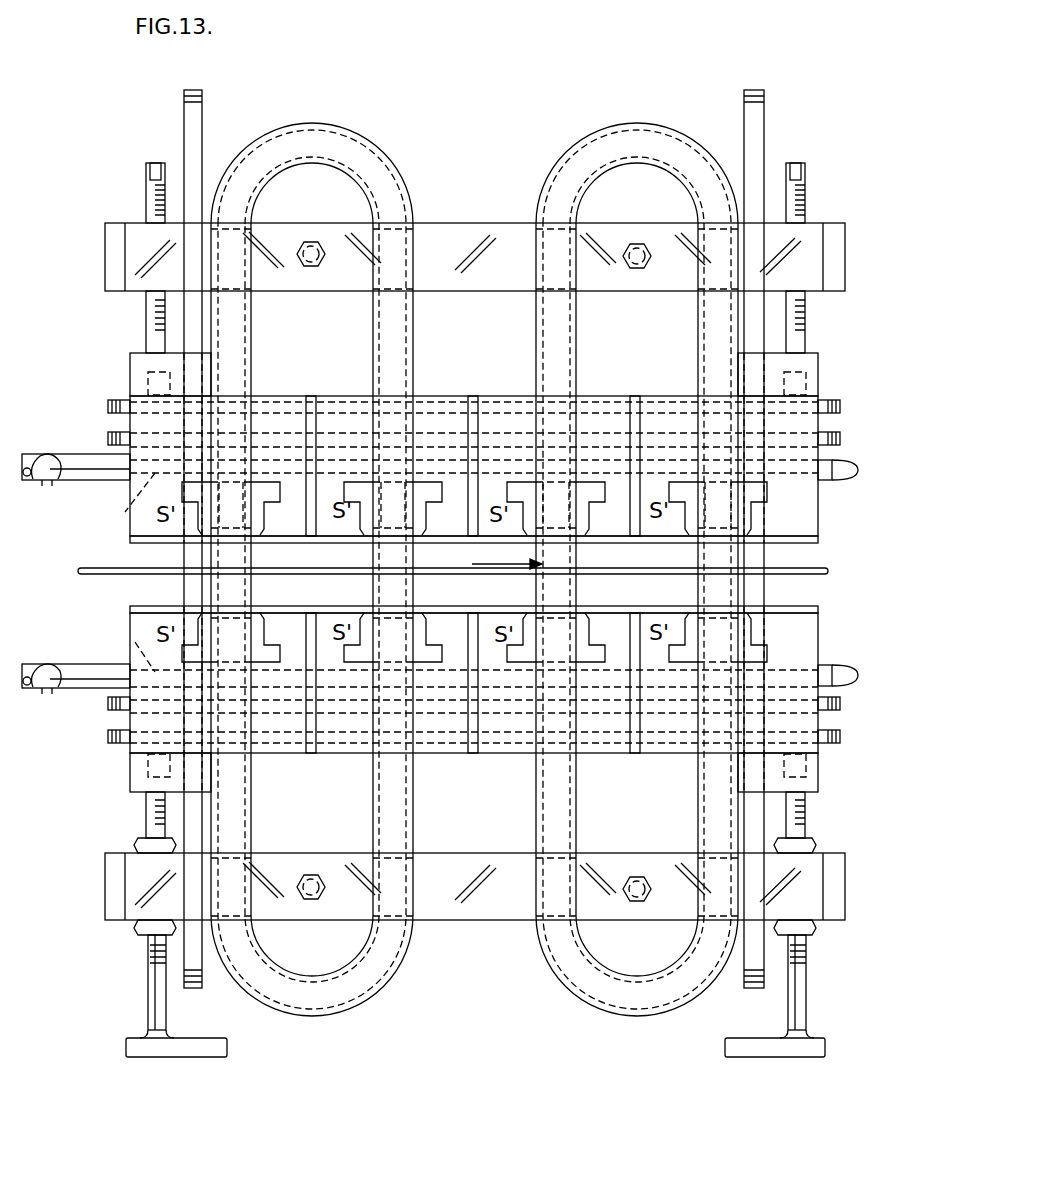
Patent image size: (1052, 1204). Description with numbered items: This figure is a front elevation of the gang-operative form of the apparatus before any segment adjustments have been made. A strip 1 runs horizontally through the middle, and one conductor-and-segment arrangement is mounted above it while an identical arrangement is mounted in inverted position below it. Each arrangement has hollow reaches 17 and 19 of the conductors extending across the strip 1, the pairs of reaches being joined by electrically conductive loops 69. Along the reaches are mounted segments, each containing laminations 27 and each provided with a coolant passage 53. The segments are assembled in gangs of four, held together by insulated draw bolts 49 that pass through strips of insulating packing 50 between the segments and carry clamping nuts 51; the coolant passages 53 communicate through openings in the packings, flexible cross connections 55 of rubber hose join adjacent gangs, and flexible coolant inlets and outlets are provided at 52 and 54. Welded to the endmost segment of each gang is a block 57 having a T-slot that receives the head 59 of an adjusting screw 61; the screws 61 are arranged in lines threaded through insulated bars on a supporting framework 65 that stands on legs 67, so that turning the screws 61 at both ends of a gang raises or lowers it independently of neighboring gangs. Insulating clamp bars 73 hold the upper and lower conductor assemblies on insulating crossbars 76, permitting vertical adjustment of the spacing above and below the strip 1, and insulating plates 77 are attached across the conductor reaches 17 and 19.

The strip 1 is at (826, 569).
The hollow reach of conductor 17 is at (388, 532).
The hollow reach of conductor 19 is at (225, 532).
The laminations 27 is at (186, 492).
The insulated draw bolts 49 is at (115, 408).
The insulating packing strips 50 is at (312, 398).
The clamping nuts 51 is at (115, 440).
The flexible coolant inlet 52 is at (98, 480).
The coolant passage 53 is at (128, 512).
The flexible coolant outlet 54 is at (30, 458).
The flexible cross connections 55 is at (48, 481).
The block 57 is at (140, 360).
The head of adjusting screw 59 is at (142, 381).
The adjusting screw 61 is at (150, 198).
The supporting framework 65 is at (195, 150).
The legs 67 is at (163, 1010).
The electrically conductive loops 69 is at (355, 150).
The insulating clamp bars 73 is at (358, 276).
The insulating crossbars 76 is at (492, 228).
The insulating plates 77 is at (162, 543).